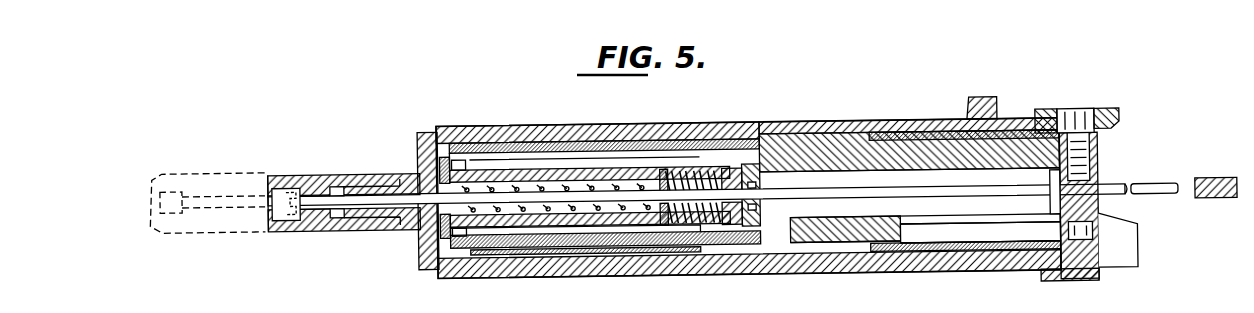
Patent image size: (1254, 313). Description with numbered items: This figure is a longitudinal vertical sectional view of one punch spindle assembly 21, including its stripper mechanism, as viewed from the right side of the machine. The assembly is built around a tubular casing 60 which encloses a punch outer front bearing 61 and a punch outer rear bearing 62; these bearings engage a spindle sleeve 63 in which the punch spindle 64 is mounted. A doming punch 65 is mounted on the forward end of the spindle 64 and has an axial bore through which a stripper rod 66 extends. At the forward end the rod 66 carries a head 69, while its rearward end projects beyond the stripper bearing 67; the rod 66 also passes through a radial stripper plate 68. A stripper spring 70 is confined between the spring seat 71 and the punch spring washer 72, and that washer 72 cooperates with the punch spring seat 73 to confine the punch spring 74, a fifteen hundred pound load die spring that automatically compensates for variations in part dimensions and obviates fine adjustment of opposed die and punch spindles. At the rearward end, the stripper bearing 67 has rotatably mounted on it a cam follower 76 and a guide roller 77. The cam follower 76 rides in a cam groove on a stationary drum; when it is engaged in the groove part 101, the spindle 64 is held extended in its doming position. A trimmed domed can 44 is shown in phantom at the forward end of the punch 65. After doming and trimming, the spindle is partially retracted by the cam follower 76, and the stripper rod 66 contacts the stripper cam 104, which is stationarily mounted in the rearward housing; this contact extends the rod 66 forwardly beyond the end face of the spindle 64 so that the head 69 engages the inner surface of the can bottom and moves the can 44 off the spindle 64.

The punch spindle assembly 21 is at (669, 288).
The trimmed domed can 44 is at (230, 176).
The tubular casing 60 is at (545, 272).
The punch outer front bearing 61 is at (468, 262).
The punch outer rear bearing 62 is at (1021, 140).
The spindle sleeve 63 is at (850, 158).
The punch spindle 64 is at (398, 228).
The doming punch 65 is at (315, 230).
The stripper rod 66 is at (397, 195).
The stripper bearing 67 is at (1098, 178).
The radial stripper plate 68 is at (421, 255).
The head 69 is at (162, 238).
The stripper spring 70 is at (498, 192).
The spring seat 71 is at (438, 186).
The punch spring washer 72 is at (666, 175).
The punch spring seat 73 is at (735, 168).
The punch spring 74 is at (708, 168).
The cam follower 76 is at (1081, 116).
The guide roller 77 is at (1100, 242).
The cam groove part 101 is at (1092, 117).
The stripper cam 104 is at (1205, 210).